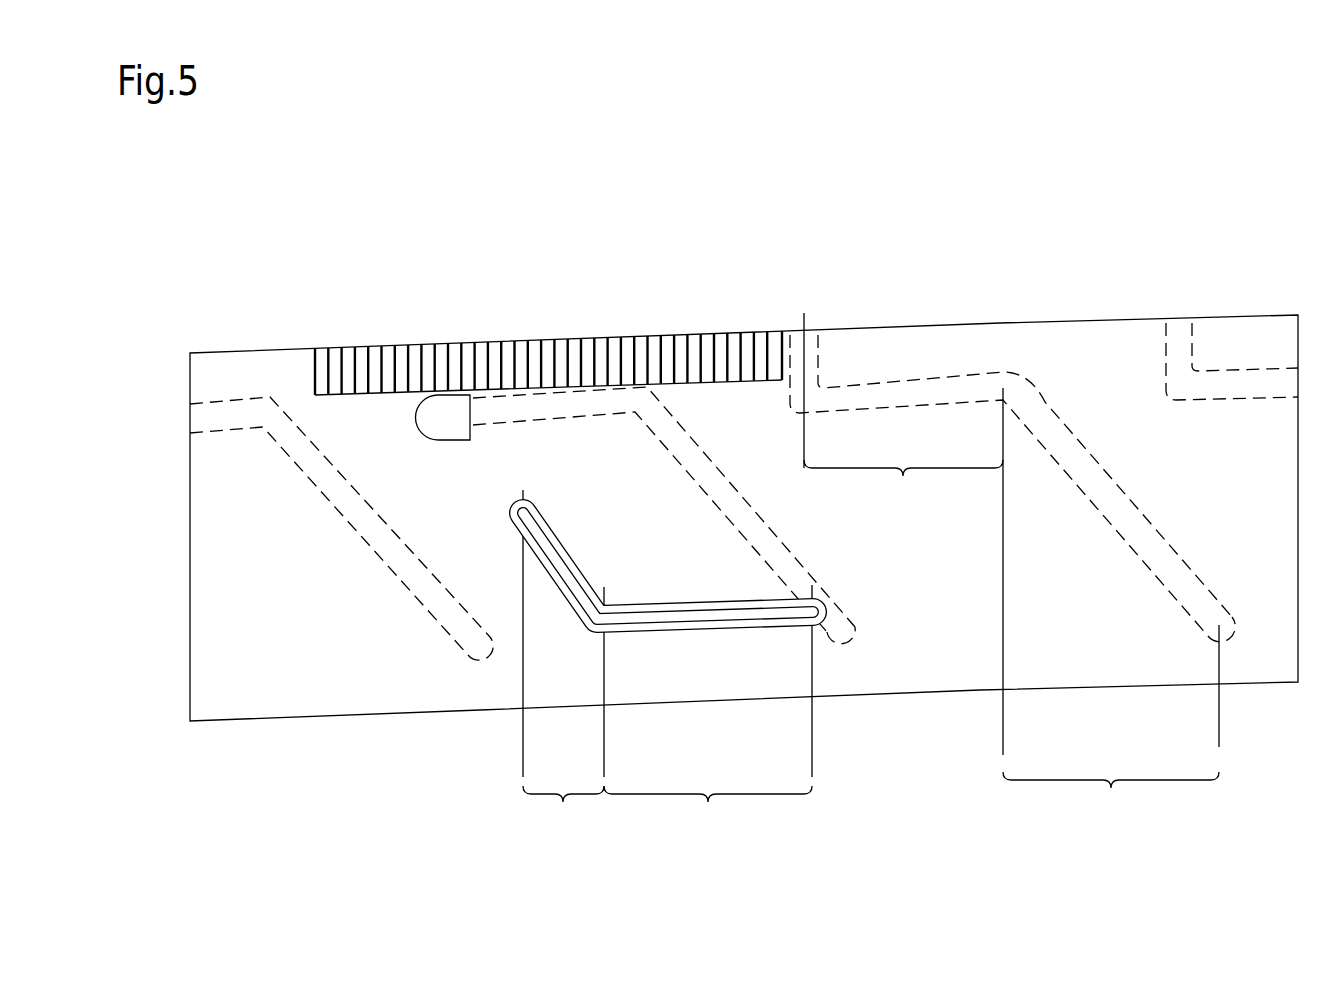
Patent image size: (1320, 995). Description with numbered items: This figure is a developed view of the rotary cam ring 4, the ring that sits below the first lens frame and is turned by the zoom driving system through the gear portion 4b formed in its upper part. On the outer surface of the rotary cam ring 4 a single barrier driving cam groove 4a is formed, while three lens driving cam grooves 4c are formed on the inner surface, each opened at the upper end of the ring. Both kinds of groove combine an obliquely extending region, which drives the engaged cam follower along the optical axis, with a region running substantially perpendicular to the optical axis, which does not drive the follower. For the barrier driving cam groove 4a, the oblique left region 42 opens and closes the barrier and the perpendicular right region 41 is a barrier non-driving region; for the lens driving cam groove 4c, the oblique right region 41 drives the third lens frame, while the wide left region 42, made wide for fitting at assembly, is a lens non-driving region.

The rotary cam ring 4 is at (1152, 253).
The barrier driving cam groove 4a is at (757, 613).
The gear portion 4b is at (618, 357).
The lens driving cam groove 4c is at (238, 408).
The region 41 is at (871, 580).
The region 42 is at (763, 653).